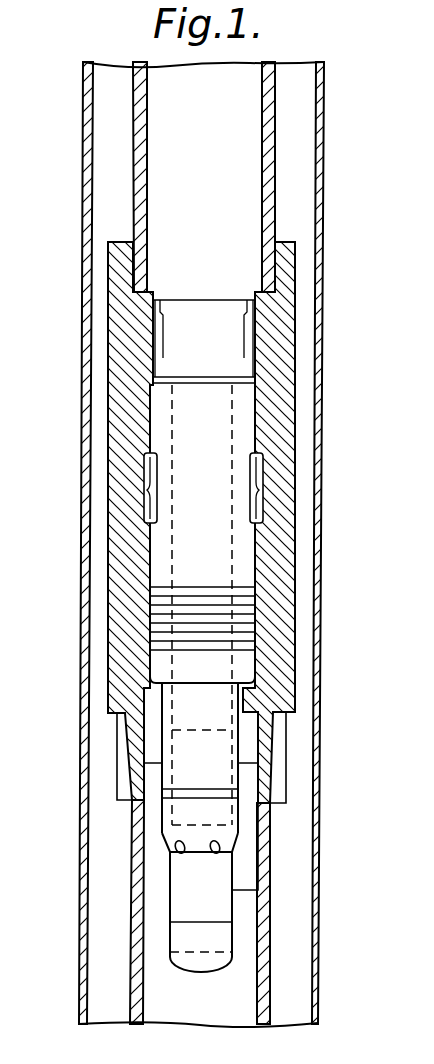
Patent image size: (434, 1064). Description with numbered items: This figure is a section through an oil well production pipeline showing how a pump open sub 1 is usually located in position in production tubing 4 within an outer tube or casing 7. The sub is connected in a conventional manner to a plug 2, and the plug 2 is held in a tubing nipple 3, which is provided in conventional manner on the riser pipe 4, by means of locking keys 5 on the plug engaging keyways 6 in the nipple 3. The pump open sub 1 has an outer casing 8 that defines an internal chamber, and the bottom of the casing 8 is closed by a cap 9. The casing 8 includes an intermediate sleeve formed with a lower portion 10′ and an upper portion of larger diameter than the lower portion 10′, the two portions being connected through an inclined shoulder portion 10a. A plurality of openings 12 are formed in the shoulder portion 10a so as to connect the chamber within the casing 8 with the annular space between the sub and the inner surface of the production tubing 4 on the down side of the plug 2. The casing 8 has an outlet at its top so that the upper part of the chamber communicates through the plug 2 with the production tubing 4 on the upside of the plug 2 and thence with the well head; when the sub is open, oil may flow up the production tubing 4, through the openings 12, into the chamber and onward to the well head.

The pump open sub 1 is at (163, 893).
The plug 2 is at (190, 528).
The tubing nipple 3 is at (280, 340).
The production tubing 4 is at (278, 165).
The locking keys 5 is at (253, 473).
The keyways 6 is at (143, 500).
The outer tube or casing 7 is at (322, 730).
The outer casing 8 is at (163, 753).
The cap 9 is at (187, 960).
The inclined shoulder portion 10a is at (163, 852).
The lower portion 10′ is at (250, 889).
The openings 12 is at (217, 840).